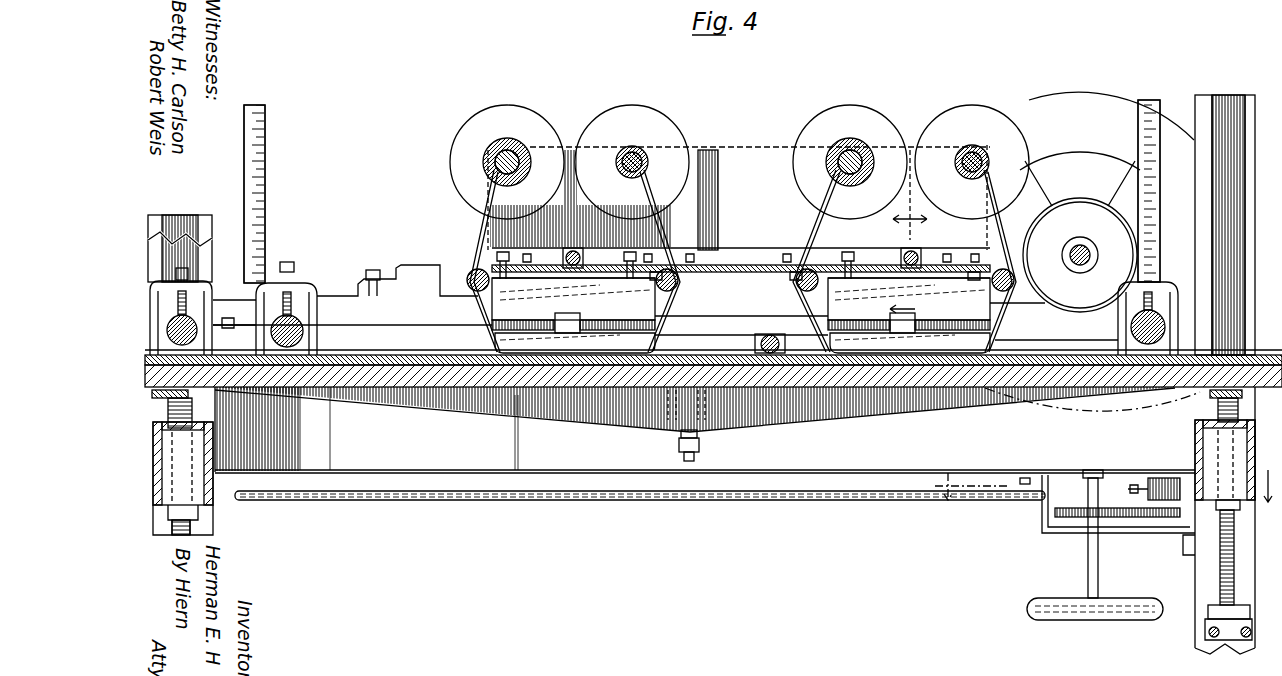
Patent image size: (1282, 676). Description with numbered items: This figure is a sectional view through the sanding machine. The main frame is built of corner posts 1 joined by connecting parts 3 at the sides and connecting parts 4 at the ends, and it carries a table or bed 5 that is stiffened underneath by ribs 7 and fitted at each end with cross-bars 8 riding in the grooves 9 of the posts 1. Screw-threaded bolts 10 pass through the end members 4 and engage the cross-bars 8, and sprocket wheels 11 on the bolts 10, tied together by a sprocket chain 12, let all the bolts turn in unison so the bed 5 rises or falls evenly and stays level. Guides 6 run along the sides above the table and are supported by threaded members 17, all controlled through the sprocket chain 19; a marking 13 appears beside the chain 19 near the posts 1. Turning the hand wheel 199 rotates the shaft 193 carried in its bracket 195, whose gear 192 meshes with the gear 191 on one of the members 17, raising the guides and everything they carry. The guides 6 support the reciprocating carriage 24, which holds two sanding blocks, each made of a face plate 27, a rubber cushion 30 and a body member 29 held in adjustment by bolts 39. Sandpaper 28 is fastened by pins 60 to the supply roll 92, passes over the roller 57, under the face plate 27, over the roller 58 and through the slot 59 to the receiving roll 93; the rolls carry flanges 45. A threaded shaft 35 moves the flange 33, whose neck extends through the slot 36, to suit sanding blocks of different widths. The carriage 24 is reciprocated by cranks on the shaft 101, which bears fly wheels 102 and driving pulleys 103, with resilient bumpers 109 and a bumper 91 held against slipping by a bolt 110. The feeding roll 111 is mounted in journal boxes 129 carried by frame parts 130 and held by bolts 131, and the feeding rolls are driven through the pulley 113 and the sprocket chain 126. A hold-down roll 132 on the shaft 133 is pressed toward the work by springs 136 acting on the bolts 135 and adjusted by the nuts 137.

The post 1 is at (1195, 572).
The connecting part 3 is at (355, 480).
The connecting part 4 is at (215, 452).
The table 5 is at (462, 388).
The guide 6 is at (320, 296).
The rib 7 is at (505, 398).
The cross-bar 8 is at (163, 394).
The groove 9 is at (186, 214).
The screw-threaded member 10 is at (367, 352).
The sprocket wheel 11 is at (1205, 632).
The sprocket chain 12 is at (1162, 302).
The direction of movement 13 is at (1101, 479).
The screw-threaded member 17 is at (266, 162).
The sprocket chain 19 is at (885, 501).
The reciprocating carriage 24 is at (737, 256).
The face plate 27 is at (590, 378).
The sandpaper 28 is at (478, 223).
The body member 29 is at (660, 305).
The cushioning pad 30 is at (836, 372).
The coöperating member 33 is at (490, 315).
The threaded shaft 35 is at (573, 248).
The slot 36 is at (572, 288).
The bolt 39 is at (503, 250).
The flange 45 is at (462, 140).
The roller 57 is at (476, 268).
The roller 58 is at (672, 248).
The slot 59 is at (692, 265).
The pin 60 is at (507, 158).
The bumper 91 is at (708, 150).
The spindle 92 is at (515, 155).
The spindle 93 is at (640, 158).
The shaft 101 is at (1080, 237).
The fly wheel 102 is at (1063, 97).
The driving pulley 103 is at (1140, 252).
The resilient bumper 109 is at (424, 266).
The bolt 110 is at (204, 312).
The feeding roll 111 is at (336, 301).
The pulley 113 is at (1172, 318).
The sprocket chain 126 is at (232, 312).
The journal box 129 is at (1218, 310).
The frame part 130 is at (298, 283).
The bolt 131 is at (270, 284).
The roll 132 is at (727, 340).
The shaft 133 is at (780, 340).
The bolt 135 is at (682, 456).
The spring 136 is at (680, 436).
The nut 137 is at (678, 446).
The pinion 191 is at (1152, 518).
The rack 192 is at (1060, 520).
The shaft 193 is at (1088, 563).
The bracket 195 is at (1042, 516).
The handle 199 is at (1072, 616).